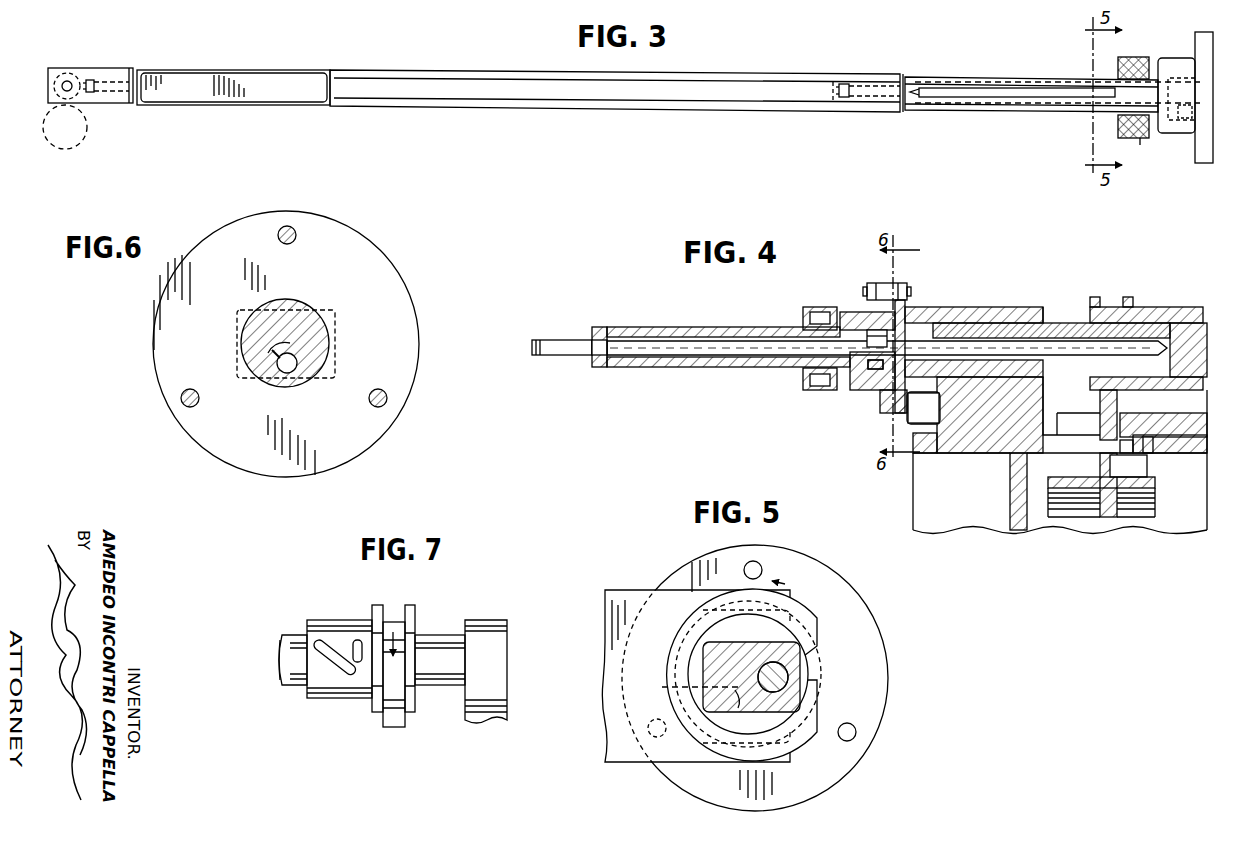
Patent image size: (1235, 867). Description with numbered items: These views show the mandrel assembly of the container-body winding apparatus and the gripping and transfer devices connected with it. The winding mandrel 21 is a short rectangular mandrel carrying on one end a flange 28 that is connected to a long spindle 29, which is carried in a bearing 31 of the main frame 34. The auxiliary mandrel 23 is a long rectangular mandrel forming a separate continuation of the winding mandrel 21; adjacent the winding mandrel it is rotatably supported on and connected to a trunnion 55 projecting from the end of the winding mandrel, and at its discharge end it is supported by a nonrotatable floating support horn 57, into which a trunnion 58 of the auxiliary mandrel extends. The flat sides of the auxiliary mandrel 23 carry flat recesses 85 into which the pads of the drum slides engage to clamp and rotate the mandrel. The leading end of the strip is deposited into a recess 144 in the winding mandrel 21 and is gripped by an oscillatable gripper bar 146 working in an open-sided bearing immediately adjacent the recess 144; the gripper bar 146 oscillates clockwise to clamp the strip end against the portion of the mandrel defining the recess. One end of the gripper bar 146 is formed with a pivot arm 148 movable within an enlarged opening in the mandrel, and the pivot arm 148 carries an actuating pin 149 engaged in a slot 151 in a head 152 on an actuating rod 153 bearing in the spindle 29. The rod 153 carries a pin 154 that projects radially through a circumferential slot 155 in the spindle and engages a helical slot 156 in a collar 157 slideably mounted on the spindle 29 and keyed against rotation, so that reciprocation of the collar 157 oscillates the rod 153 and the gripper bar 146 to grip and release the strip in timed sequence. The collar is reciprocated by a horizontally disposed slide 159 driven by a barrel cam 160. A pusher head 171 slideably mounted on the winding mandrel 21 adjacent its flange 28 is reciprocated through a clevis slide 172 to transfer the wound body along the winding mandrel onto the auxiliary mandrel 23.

In FIG. 3, the winding mandrel 21 is at (975, 112).
In FIG. 6, the winding mandrel 21 is at (331, 313).
In FIG. 4, the winding mandrel 21 is at (641, 330).
In FIG. 5, the winding mandrel 21 is at (730, 648).
In FIG. 3, the auxiliary mandrel 23 is at (474, 72).
In FIG. 3, the flange 28 is at (1204, 163).
In FIG. 6, the flange 28 is at (192, 262).
In FIG. 4, the flange 28 is at (893, 290).
In FIG. 5, the flange 28 is at (828, 580).
In FIG. 4, the spindle 29 is at (1006, 330).
In FIG. 7, the spindle 29 is at (286, 637).
In FIG. 4, the bearing 31 is at (1032, 312).
In FIG. 7, the bearing 31 is at (478, 620).
In FIG. 4, the frame 34 is at (1012, 508).
In FIG. 3, the trunnion 55 is at (876, 103).
In FIG. 4, the trunnion 55 is at (557, 353).
In FIG. 3, the support horn 57 is at (104, 68).
In FIG. 3, the trunnion 58 is at (108, 95).
In FIG. 3, the flat recesses 85 is at (269, 88).
In FIG. 3, the recess 144 is at (954, 88).
In FIG. 5, the recess 144 is at (812, 677).
In FIG. 4, the gripper bar 146 is at (672, 348).
In FIG. 5, the gripper bar 146 is at (795, 670).
In FIG. 3, the pivot arm 148 is at (1161, 90).
In FIG. 4, the pivot arm 148 is at (858, 388).
In FIG. 5, the pivot arm 148 is at (683, 692).
In FIG. 3, the actuating pin 149 is at (1184, 118).
In FIG. 6, the actuating pin 149 is at (297, 372).
In FIG. 4, the actuating pin 149 is at (876, 372).
In FIG. 6, the slot 151 is at (278, 366).
In FIG. 4, the slot 151 is at (925, 408).
In FIG. 6, the head 152 is at (250, 365).
In FIG. 4, the head 152 is at (872, 330).
In FIG. 4, the actuating rod 153 is at (958, 342).
In FIG. 4, the pin 154 is at (1172, 345).
In FIG. 7, the pin 154 is at (372, 722).
In FIG. 4, the circumferential slot 155 is at (1150, 380).
In FIG. 7, the circumferential slot 155 is at (357, 640).
In FIG. 7, the helical slot 156 is at (335, 666).
In FIG. 4, the collar 157 is at (1140, 308).
In FIG. 7, the collar 157 is at (311, 620).
In FIG. 4, the slide 159 is at (1096, 426).
In FIG. 4, the barrel cam 160 is at (1132, 492).
In FIG. 3, the pusher head 171 is at (1144, 140).
In FIG. 5, the pusher head 171 is at (800, 621).
In FIG. 3, the clevis slide 172 is at (1135, 57).
In FIG. 4, the clevis slide 172 is at (816, 392).
In FIG. 5, the clevis slide 172 is at (627, 592).